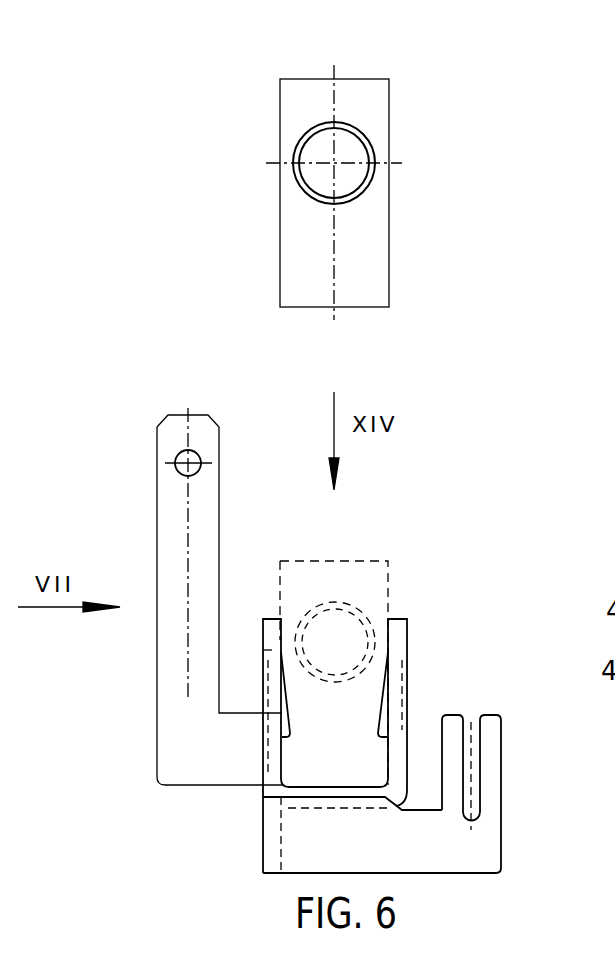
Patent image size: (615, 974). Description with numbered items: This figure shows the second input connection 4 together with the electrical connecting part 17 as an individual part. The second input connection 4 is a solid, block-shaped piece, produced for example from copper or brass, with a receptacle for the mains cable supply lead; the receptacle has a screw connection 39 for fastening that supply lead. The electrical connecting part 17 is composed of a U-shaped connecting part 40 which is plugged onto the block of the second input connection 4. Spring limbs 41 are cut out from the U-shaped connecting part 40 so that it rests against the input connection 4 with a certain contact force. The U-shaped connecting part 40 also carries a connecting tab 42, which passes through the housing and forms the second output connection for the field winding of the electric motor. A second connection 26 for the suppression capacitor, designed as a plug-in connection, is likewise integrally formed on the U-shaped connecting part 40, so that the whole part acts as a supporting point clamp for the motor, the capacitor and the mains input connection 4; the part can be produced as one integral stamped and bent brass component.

The second input connection 4 is at (367, 265).
The screw connection 39 is at (353, 153).
The electrical connecting part 17 is at (412, 577).
The connecting tab 42 is at (172, 512).
The spring limbs 41 is at (288, 727).
The U-shaped connecting part 40 is at (398, 750).
The second connection 26 is at (475, 805).